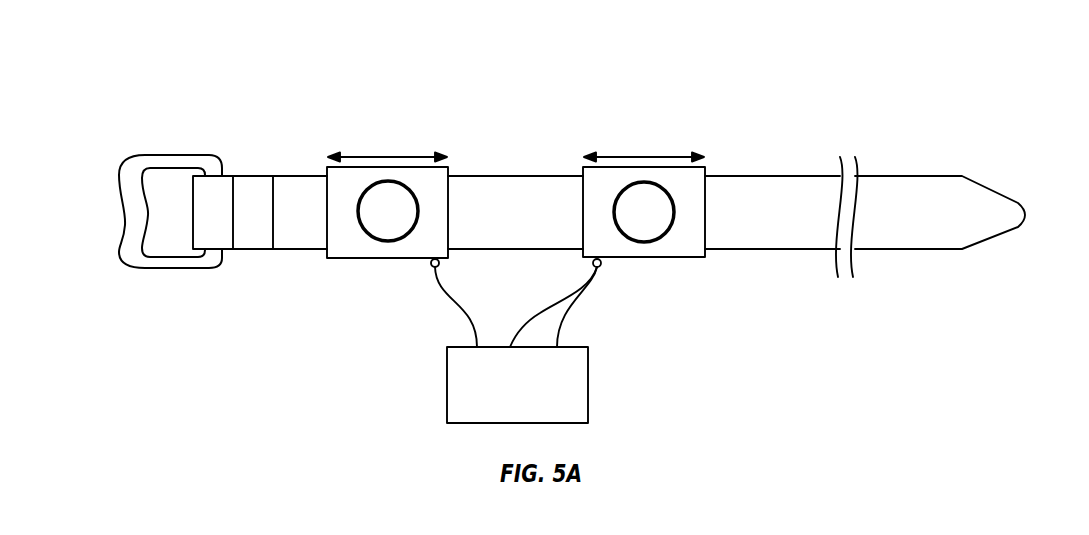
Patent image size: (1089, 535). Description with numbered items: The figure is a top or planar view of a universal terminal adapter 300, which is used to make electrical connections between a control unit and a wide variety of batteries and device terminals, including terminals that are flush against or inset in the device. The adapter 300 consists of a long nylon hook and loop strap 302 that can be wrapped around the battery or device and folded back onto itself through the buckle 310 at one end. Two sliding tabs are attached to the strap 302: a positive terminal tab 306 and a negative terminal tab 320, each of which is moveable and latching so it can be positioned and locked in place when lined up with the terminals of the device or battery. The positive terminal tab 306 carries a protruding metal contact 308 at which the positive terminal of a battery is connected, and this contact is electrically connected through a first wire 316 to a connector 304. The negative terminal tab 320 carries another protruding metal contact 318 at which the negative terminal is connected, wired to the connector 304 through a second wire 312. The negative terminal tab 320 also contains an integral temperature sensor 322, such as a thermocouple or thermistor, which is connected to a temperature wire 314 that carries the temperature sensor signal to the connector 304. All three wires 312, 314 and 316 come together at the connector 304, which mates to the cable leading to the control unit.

The universal terminal adapter 300 is at (755, 58).
The strap 302 is at (993, 193).
The connector 304 is at (592, 412).
The sliding tab 306 is at (352, 247).
The protruding metal contact 308 is at (408, 225).
The buckle 310 is at (188, 156).
The second wire 312 is at (603, 281).
The temperature wire 314 is at (545, 318).
The first wire 316 is at (440, 306).
The other protruding metal contact 318 is at (665, 225).
The other sliding tab 320 is at (677, 247).
The integral temperature sensor 322 is at (592, 262).